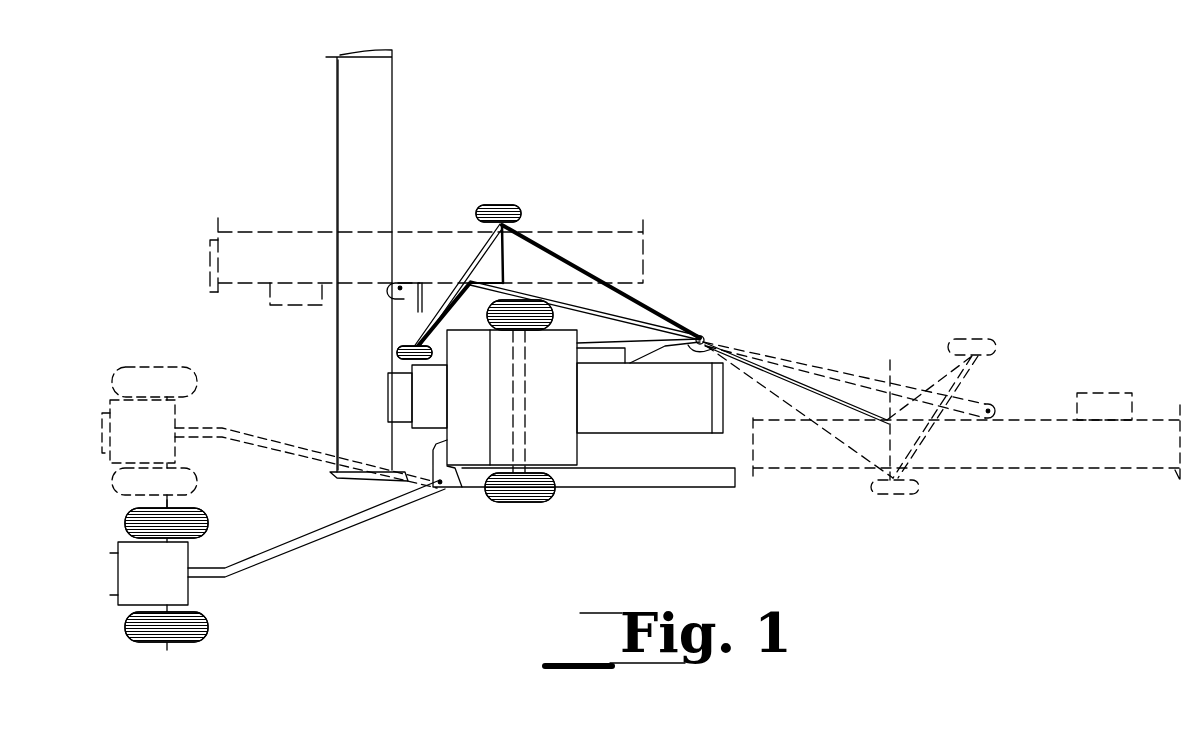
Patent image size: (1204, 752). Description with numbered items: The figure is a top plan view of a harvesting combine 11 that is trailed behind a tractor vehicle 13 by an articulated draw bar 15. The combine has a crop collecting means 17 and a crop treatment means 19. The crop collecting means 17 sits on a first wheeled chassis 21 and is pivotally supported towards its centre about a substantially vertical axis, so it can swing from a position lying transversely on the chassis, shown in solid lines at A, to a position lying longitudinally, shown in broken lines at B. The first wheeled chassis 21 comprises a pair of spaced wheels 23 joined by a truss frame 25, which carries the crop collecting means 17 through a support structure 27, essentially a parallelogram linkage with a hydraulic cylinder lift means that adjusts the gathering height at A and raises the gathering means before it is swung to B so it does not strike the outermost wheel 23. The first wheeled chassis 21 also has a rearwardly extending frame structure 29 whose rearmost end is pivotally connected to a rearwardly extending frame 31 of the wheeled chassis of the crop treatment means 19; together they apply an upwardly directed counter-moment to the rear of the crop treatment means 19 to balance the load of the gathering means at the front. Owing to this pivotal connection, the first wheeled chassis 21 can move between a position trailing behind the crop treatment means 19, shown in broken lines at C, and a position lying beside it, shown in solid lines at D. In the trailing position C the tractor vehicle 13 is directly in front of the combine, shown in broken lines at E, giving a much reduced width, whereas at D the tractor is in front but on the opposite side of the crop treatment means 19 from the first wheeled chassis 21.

The harvesting combine 11 is at (603, 510).
The tractor vehicle 13 is at (193, 598).
The articulated draw bar 15 is at (325, 537).
The crop collecting means 17 is at (348, 151).
The crop treatment means 19 is at (478, 456).
The first wheeled chassis 21 is at (532, 240).
The wheels 23 is at (505, 205).
The truss frame 25 is at (485, 243).
The support structure 27 is at (402, 298).
The rearwardly extending frame structure 29 is at (617, 310).
The rearwardly extending frame 31 is at (712, 340).
The transverse position A is at (392, 88).
The longitudinal position B is at (645, 241).
The trailing position C is at (1034, 410).
The operative position D is at (563, 258).
The tractor trailing-mode position E is at (155, 353).